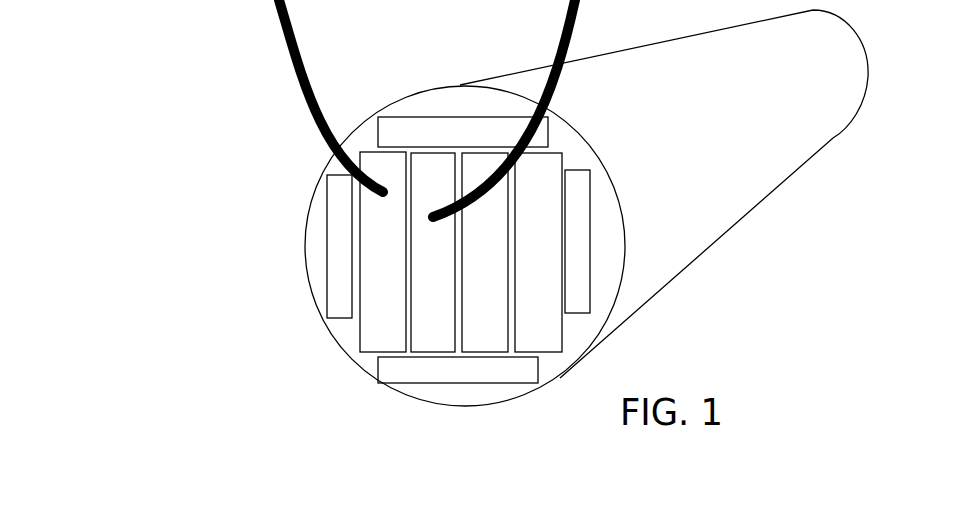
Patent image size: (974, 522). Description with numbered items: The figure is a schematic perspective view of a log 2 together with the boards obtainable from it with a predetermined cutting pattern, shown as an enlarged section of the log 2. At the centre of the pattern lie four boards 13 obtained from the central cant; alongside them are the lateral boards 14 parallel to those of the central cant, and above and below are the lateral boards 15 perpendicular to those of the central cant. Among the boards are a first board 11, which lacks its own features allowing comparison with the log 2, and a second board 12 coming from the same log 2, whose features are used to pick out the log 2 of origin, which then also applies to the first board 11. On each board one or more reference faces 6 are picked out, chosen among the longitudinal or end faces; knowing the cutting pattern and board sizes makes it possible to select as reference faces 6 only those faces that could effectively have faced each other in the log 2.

The log 2 is at (725, 125).
The reference face 6 is at (418, 285).
The first board 11 is at (380, 262).
The second board 12 is at (427, 317).
The boards obtained from the central cant 13 is at (487, 280).
The lateral boards parallel to those of the central cant 14 is at (343, 242).
The lateral boards perpendicular to those of the central cant 15 is at (422, 135).